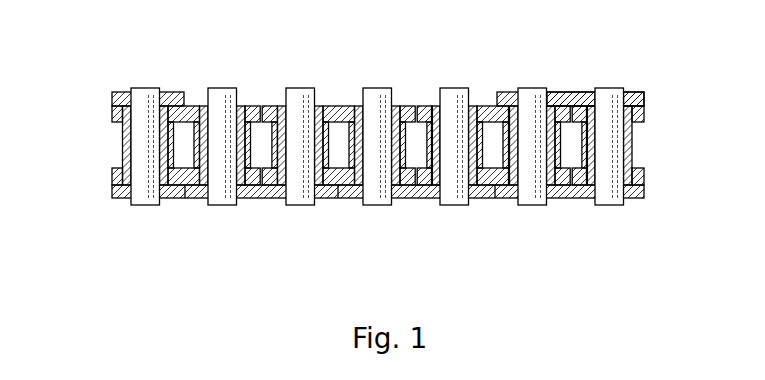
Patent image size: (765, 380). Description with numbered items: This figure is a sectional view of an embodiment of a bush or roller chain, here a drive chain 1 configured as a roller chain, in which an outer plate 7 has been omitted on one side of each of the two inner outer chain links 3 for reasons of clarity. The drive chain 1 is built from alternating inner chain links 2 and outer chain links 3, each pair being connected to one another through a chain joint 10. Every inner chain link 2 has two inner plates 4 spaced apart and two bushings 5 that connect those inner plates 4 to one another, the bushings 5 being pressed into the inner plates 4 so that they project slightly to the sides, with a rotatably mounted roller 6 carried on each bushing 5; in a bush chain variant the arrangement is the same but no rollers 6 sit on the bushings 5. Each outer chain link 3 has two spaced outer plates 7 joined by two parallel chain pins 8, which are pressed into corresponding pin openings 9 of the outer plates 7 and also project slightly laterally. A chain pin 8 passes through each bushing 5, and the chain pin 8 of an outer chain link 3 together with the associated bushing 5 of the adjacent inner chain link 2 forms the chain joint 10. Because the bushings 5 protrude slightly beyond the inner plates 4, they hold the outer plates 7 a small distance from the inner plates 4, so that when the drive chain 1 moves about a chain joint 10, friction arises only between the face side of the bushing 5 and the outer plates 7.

The drive chain 1 is at (102, 69).
The inner chain link 2 is at (350, 101).
The outer chain link 3 is at (581, 88).
The inner plate 4 is at (330, 105).
The bushing 5 is at (473, 106).
The roller 6 is at (420, 118).
The outer plate 7 is at (560, 92).
The chain pin 8 is at (610, 96).
The pin opening 9 is at (155, 100).
The chain joint 10 is at (633, 86).